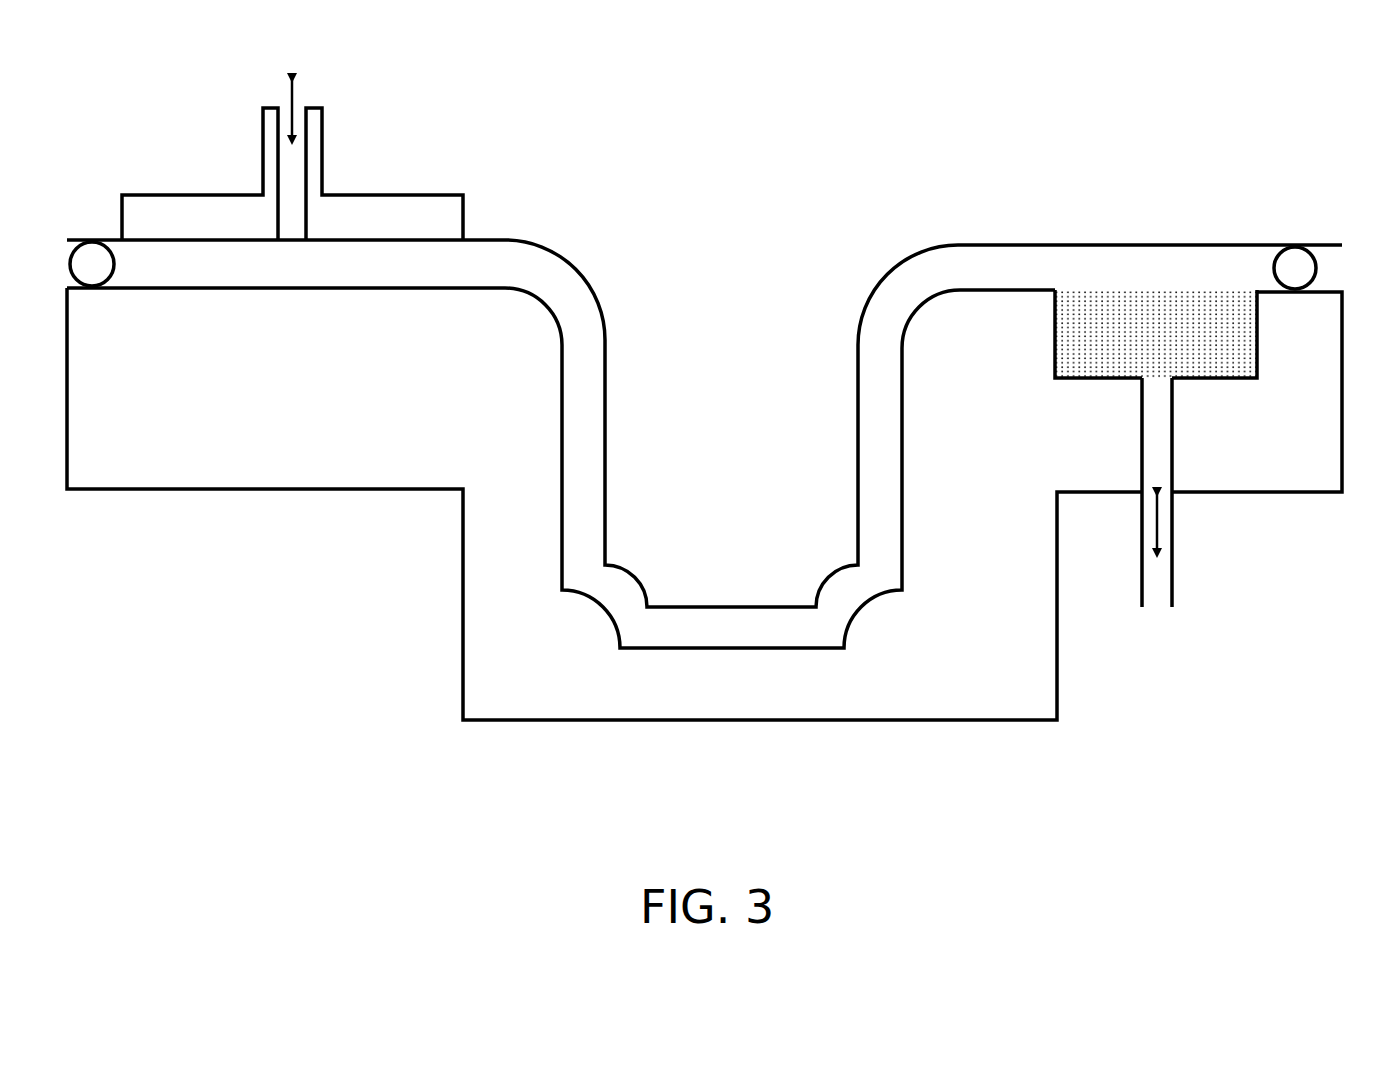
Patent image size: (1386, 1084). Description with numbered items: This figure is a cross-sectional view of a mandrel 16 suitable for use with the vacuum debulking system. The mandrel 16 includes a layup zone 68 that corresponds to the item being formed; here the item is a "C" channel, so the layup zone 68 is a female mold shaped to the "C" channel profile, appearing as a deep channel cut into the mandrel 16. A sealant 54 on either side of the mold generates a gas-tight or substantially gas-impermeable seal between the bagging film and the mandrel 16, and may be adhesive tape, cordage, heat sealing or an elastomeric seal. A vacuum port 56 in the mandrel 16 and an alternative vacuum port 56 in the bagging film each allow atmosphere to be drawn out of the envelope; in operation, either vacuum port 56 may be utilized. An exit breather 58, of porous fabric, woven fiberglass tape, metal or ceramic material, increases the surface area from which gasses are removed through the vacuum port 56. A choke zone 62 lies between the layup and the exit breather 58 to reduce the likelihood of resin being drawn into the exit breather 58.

The mandrel 16 is at (446, 385).
The sealant 54 is at (70, 266).
The vacuum port 56 is at (322, 123).
The exit breather 58 is at (1055, 352).
The choke zone 62 is at (1038, 305).
The layup zone 68 is at (732, 288).